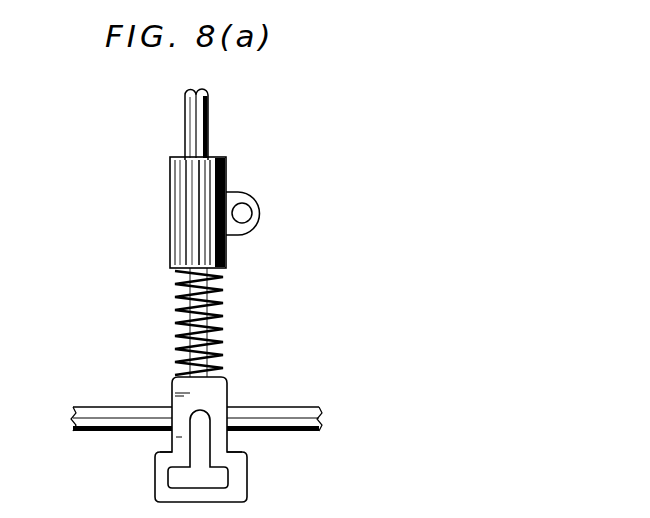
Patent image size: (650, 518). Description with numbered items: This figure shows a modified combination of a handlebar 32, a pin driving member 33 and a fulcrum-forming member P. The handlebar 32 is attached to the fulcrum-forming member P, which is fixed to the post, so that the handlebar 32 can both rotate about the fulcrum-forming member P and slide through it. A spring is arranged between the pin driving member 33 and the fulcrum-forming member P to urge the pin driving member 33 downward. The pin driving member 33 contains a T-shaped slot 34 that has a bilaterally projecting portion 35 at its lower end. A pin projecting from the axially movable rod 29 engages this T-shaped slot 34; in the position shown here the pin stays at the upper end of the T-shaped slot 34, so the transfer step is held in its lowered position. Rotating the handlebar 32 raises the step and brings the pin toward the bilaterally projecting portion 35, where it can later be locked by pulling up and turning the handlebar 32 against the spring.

The axially movable rod 29 is at (113, 413).
The handlebar 32 is at (210, 127).
The pin driving member 33 is at (214, 390).
The T-shaped slot 34 is at (203, 442).
The bilaterally projecting portion 35 is at (213, 480).
The fulcrum-forming member P is at (245, 213).